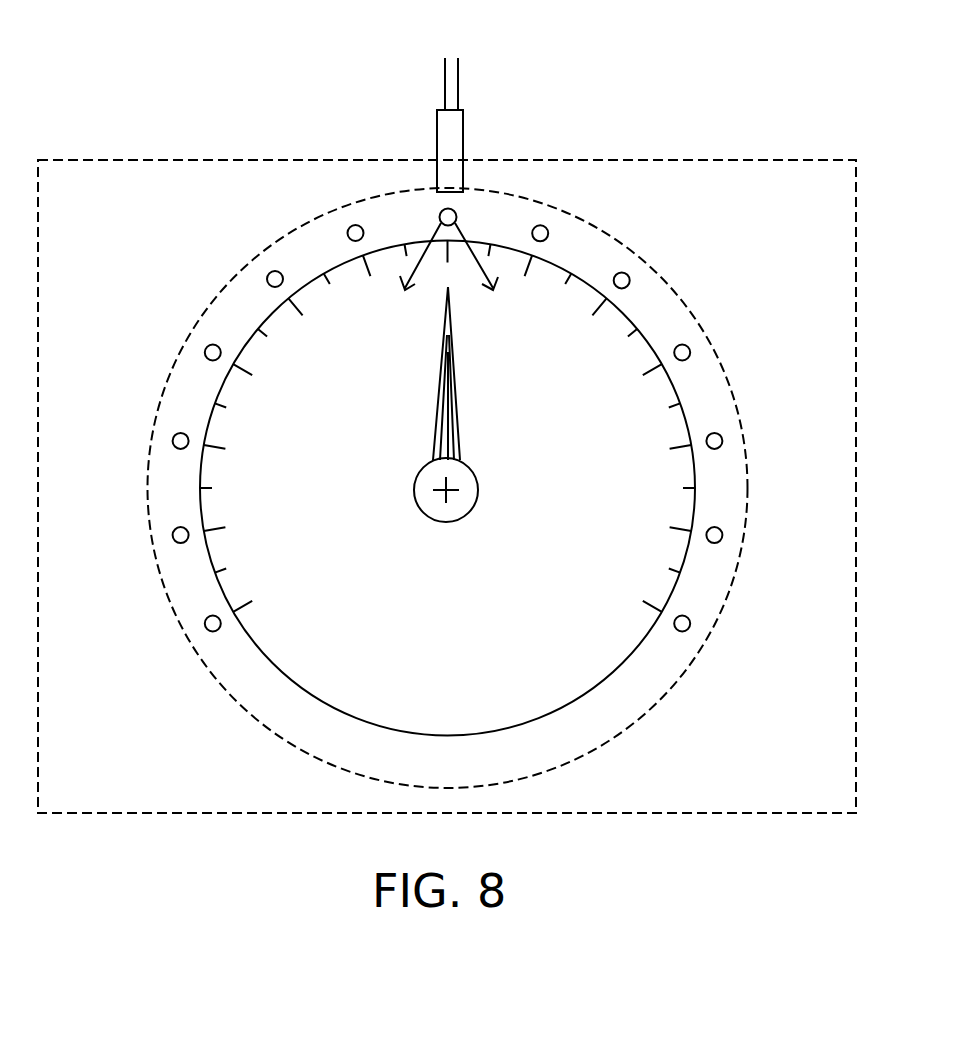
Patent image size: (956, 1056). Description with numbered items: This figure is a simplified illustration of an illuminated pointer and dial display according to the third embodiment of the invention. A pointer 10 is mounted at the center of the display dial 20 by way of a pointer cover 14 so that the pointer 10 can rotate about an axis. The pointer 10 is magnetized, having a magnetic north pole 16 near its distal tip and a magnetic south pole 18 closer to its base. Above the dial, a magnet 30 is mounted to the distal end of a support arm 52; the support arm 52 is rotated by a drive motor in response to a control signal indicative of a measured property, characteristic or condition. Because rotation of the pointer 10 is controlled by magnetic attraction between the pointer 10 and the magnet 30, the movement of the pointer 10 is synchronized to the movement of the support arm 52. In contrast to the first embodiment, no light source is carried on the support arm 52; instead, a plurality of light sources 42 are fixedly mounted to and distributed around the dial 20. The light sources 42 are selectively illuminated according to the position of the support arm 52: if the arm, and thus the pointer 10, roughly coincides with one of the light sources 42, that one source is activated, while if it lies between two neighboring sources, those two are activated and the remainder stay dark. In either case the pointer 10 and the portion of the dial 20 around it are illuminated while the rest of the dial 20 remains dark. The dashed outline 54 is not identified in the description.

The pointer 10 is at (435, 373).
The pointer cover 14 is at (416, 524).
The magnetic north pole 16 is at (462, 305).
The magnetic south pole 18 is at (468, 458).
The display dial 20 is at (336, 631).
The magnet 30 is at (472, 174).
The light sources 42 is at (200, 345).
The support arm 52 is at (430, 82).
The flange outline 54 is at (738, 366).